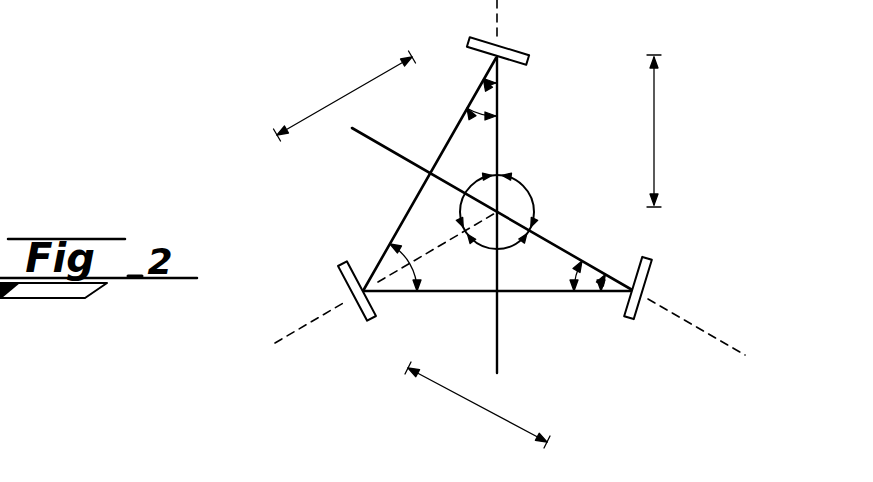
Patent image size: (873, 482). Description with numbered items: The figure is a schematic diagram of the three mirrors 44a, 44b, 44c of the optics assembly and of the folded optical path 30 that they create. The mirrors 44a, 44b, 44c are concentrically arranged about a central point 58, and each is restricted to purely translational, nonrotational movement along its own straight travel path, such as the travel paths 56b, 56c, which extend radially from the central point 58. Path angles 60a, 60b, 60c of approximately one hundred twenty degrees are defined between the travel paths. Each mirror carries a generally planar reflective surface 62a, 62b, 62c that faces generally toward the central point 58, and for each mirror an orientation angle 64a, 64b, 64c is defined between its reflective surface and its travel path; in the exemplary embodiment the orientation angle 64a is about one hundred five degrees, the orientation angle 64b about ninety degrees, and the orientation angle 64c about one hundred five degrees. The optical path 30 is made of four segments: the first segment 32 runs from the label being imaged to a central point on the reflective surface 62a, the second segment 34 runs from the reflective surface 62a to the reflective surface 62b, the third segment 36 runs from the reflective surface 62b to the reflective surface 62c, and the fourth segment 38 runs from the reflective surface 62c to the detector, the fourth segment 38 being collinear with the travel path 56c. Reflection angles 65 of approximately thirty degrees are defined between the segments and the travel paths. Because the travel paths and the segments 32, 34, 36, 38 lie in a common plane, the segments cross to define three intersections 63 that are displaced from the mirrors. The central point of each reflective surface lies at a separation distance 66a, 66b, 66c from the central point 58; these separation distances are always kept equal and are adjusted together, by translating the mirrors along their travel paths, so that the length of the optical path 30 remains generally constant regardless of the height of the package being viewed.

The optical path 30 is at (570, 357).
The first segment 32 is at (497, 357).
The second segment 34 is at (405, 212).
The third segment 36 is at (519, 294).
The fourth segment 38 is at (393, 146).
The mirror 44a is at (506, 44).
The mirror 44b is at (341, 279).
The mirror 44c is at (655, 280).
The travel path 56b is at (295, 330).
The travel path 56c is at (697, 326).
The central point 58 is at (508, 180).
The path angle 60a is at (482, 174).
The path angle 60b is at (477, 246).
The path angle 60c is at (532, 195).
The reflective surface 62a is at (518, 68).
The reflective surface 62b is at (350, 266).
The reflective surface 62c is at (641, 262).
The intersection 63 is at (412, 177).
The orientation angle 64a is at (474, 58).
The orientation angle 64b is at (374, 312).
The orientation angle 64c is at (620, 310).
The reflection angle 65 is at (500, 128).
The separation distance 66a is at (656, 121).
The separation distance 66b is at (345, 94).
The separation distance 66c is at (467, 398).